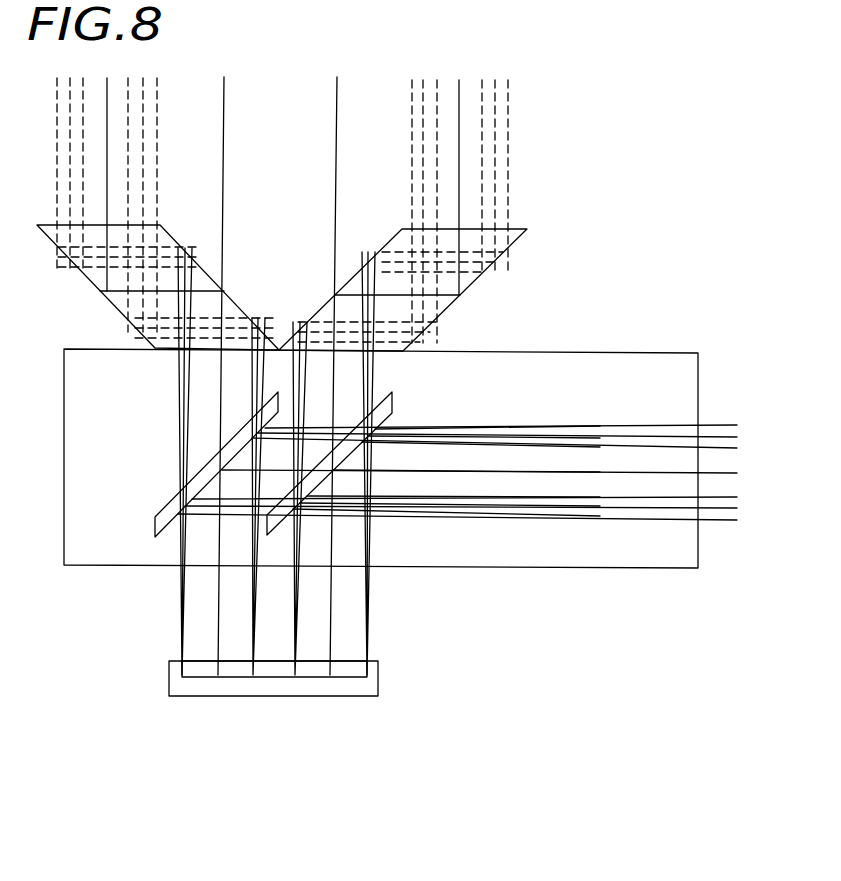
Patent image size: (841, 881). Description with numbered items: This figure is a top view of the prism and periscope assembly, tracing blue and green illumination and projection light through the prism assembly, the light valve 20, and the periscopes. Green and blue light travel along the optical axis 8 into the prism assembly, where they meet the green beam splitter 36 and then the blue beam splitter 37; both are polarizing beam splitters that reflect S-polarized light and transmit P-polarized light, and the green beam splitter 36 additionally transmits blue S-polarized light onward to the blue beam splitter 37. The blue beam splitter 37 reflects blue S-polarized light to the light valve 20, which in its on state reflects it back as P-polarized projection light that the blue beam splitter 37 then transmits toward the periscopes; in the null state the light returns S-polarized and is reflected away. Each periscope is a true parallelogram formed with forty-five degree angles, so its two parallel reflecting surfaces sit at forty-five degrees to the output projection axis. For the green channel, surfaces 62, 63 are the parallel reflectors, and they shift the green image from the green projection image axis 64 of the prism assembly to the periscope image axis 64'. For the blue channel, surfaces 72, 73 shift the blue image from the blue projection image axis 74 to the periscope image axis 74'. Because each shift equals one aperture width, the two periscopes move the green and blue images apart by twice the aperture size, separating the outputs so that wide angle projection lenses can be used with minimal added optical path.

The optical axis 8 is at (712, 476).
The light valve 20 is at (176, 697).
The green beam splitter 36 is at (392, 398).
The blue beam splitter 37 is at (153, 527).
The reflecting surface 62 is at (352, 280).
The reflecting surface 63 is at (470, 286).
The green projection image axis 64 is at (312, 376).
The periscope image axis 64' is at (460, 190).
The reflecting surface 72 is at (196, 265).
The reflecting surface 73 is at (100, 290).
The blue projection image axis 74 is at (246, 373).
The periscope image axis 74' is at (107, 189).